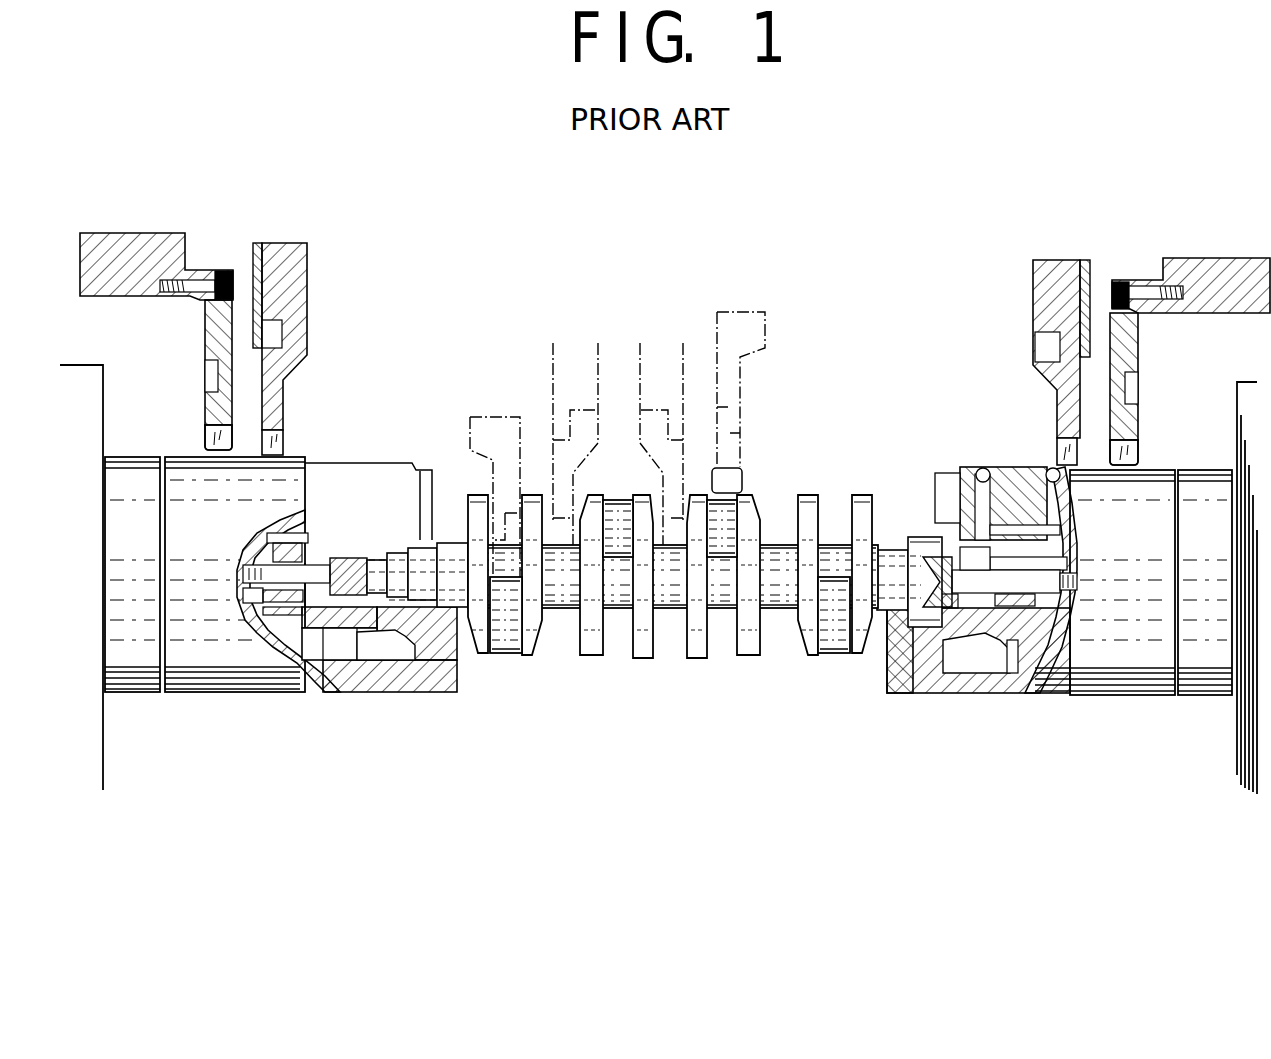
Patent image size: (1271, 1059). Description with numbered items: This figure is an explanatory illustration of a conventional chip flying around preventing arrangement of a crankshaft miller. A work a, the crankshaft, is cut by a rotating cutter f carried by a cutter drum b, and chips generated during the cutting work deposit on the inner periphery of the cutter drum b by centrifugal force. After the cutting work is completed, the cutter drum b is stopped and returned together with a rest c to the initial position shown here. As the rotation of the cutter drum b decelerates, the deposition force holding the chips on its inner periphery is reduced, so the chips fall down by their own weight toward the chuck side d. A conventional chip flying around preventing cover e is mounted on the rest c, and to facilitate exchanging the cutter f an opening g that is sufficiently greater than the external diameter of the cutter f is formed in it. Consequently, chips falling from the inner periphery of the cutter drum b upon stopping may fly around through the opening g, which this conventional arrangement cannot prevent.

The work a is at (656, 645).
The cutter drum b is at (186, 255).
The rest c is at (282, 297).
The chuck side d is at (200, 652).
The chip flying around preventing cover e is at (292, 279).
The cutter f is at (206, 431).
The opening g is at (284, 409).